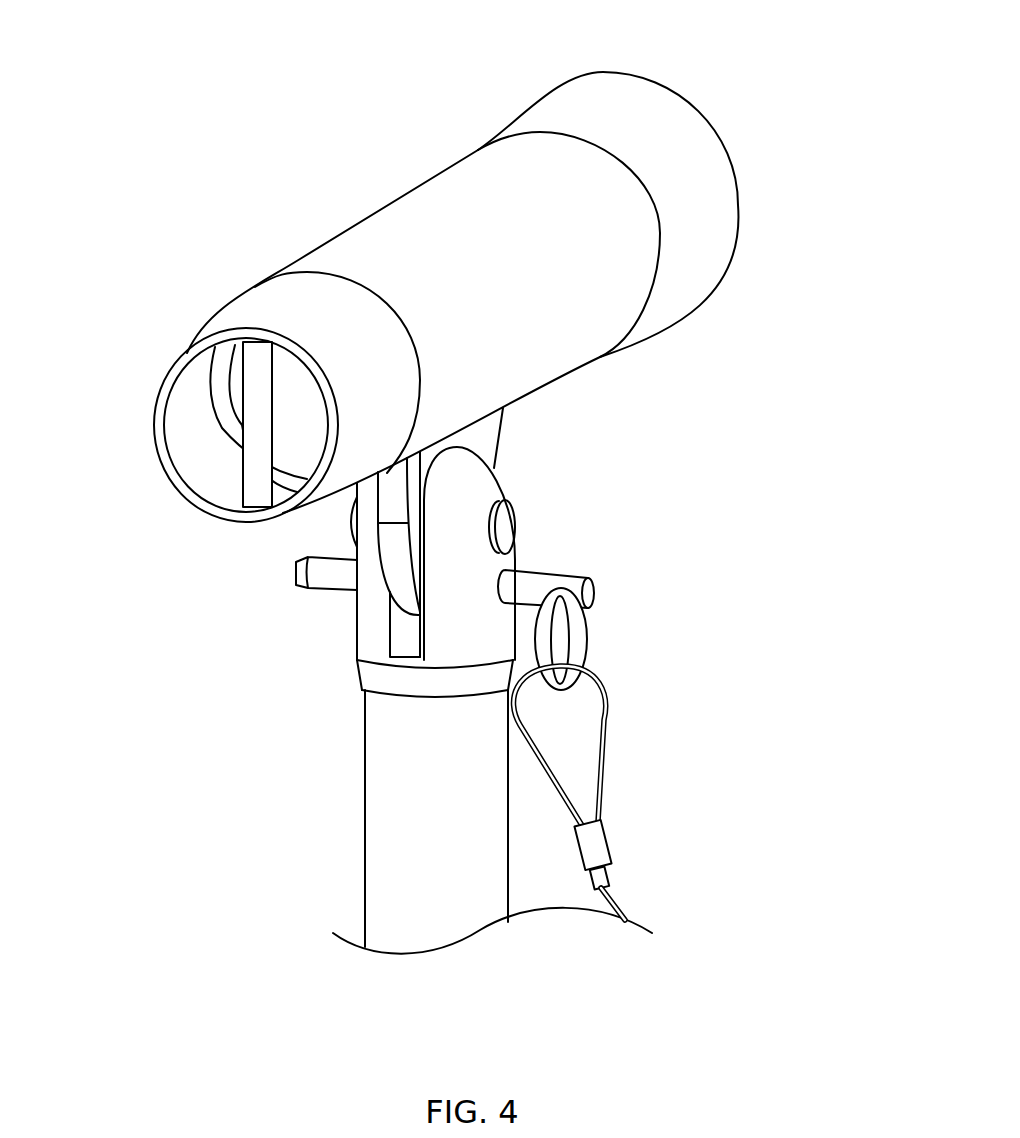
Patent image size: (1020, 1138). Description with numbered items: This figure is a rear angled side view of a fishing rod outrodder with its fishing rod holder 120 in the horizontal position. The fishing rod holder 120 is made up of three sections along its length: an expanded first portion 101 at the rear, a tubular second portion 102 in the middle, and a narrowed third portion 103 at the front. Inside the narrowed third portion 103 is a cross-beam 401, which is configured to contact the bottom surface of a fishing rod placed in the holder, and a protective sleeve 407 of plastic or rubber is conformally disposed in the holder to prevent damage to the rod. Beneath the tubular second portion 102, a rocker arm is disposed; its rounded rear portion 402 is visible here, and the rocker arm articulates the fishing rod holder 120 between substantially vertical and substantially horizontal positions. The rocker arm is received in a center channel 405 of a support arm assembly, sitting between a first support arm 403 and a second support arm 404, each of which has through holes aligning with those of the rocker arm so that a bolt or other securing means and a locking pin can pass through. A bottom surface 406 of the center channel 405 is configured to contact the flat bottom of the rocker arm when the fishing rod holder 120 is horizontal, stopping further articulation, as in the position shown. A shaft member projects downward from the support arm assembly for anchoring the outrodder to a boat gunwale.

The expanded first portion 101 is at (625, 122).
The tubular second portion 102 is at (487, 219).
The narrowed third portion 103 is at (280, 304).
The fishing rod holder 120 is at (373, 199).
The cross-beam 401 is at (248, 448).
The rounded rear portion 402 is at (406, 564).
The first support arm 403 is at (485, 486).
The second support arm 404 is at (359, 532).
The center channel 405 is at (395, 615).
The bottom surface of the center channel 406 is at (404, 649).
The protective sleeve 407 is at (212, 373).